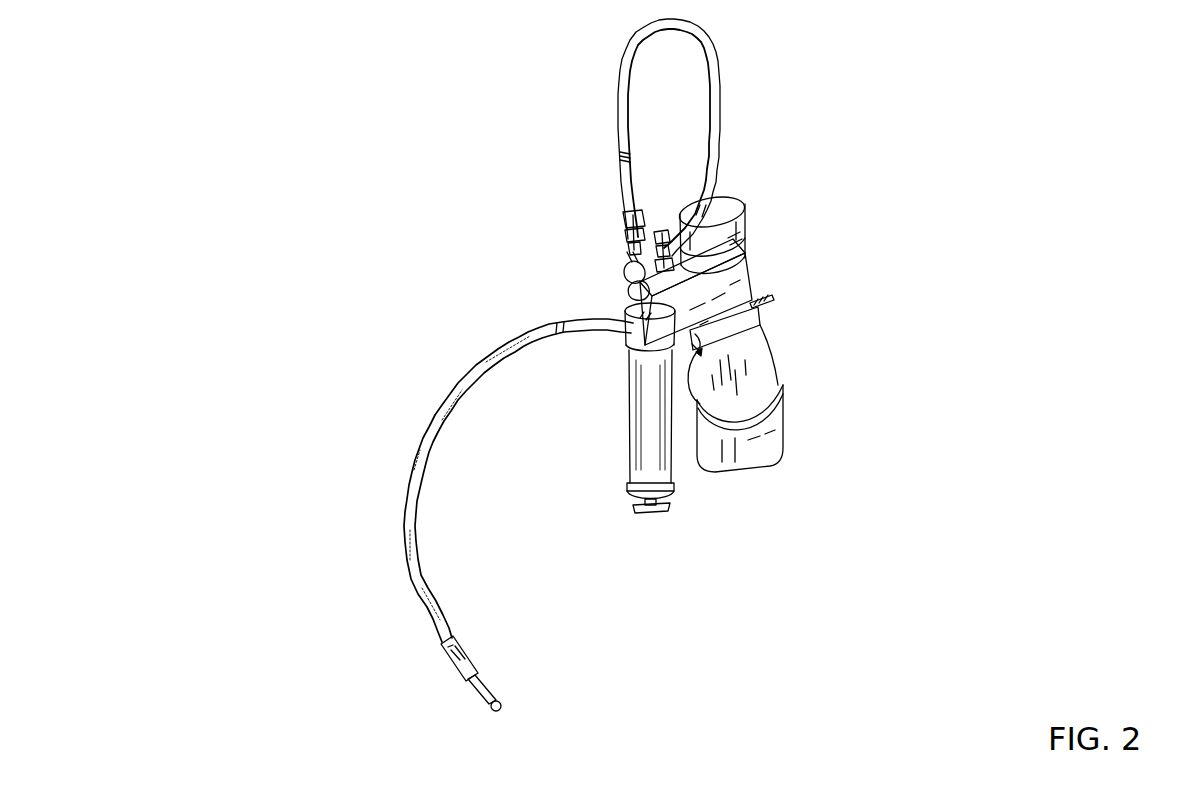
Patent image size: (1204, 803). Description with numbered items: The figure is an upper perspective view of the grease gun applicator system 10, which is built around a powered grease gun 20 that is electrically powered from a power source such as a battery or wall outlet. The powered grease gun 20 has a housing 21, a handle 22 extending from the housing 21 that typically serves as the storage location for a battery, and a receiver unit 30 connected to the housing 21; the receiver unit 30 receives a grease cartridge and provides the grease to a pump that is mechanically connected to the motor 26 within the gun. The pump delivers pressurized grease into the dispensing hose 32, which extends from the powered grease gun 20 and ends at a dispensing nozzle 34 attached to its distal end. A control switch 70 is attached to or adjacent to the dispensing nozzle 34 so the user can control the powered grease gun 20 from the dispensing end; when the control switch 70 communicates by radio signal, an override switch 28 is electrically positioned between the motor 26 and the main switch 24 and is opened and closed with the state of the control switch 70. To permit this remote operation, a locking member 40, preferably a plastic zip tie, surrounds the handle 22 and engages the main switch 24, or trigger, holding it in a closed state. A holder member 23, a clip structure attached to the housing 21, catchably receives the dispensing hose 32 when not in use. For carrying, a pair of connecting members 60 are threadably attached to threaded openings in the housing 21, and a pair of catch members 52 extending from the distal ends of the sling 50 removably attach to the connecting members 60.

The grease gun applicator system 10 is at (318, 151).
The powered grease gun 20 is at (763, 355).
The housing 21 is at (664, 247).
The handle 22 is at (778, 387).
The holder member 23 is at (624, 342).
The main switch 24 is at (683, 380).
The motor 26 is at (742, 253).
The override switch 28 is at (741, 194).
The receiver unit 30 is at (630, 457).
The dispensing hose 32 is at (410, 543).
The dispensing nozzle 34 is at (502, 704).
The locking member 40 is at (776, 302).
The sling 50 is at (715, 68).
The catch members 52 is at (630, 256).
The connecting members 60 is at (628, 295).
The control switch 70 is at (476, 652).